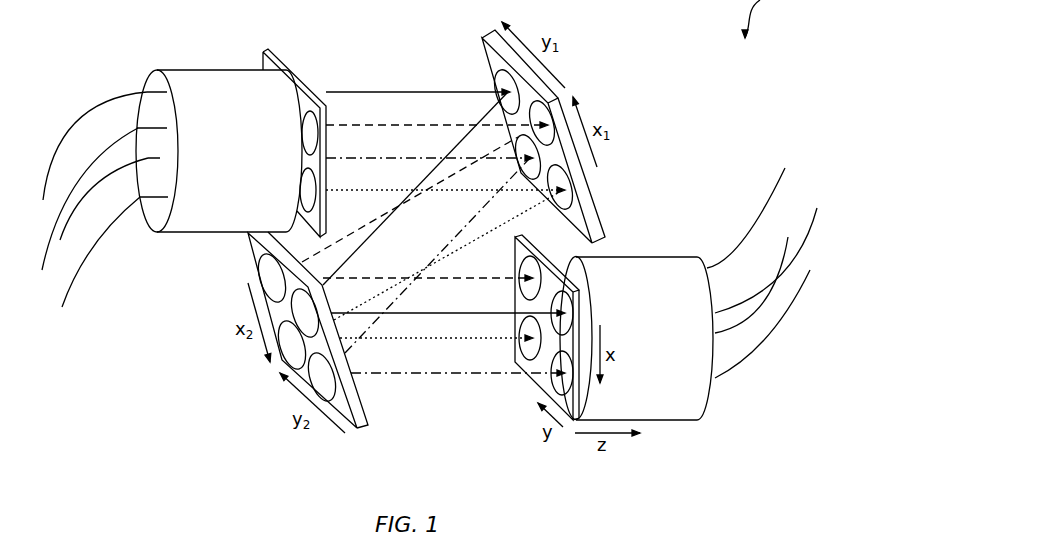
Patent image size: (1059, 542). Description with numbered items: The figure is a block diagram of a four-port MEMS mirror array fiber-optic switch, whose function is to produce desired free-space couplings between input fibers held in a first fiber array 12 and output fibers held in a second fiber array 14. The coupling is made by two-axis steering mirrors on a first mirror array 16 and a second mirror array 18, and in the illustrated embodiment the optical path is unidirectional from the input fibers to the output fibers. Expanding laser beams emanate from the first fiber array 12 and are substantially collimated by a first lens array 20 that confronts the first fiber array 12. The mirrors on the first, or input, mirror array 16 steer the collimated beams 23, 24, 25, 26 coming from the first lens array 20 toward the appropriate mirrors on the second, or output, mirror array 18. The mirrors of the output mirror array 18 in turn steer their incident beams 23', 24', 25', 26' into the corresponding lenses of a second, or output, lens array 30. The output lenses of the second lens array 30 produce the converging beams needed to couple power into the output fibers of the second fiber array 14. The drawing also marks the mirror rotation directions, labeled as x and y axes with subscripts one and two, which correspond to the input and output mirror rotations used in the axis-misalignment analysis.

The first fiber array 12 is at (205, 69).
The second fiber array 14 is at (672, 421).
The first mirror array 16 is at (602, 228).
The second mirror array 18 is at (363, 433).
The first lens array 20 is at (273, 60).
The collimated beam 23 is at (418, 69).
The collimated beam 24 is at (437, 114).
The collimated beam 25 is at (429, 168).
The collimated beam 26 is at (445, 213).
The incident beam 23' is at (448, 301).
The incident beam 24' is at (428, 253).
The incident beam 25' is at (458, 396).
The incident beam 26' is at (436, 350).
The second lens array 30 is at (540, 387).